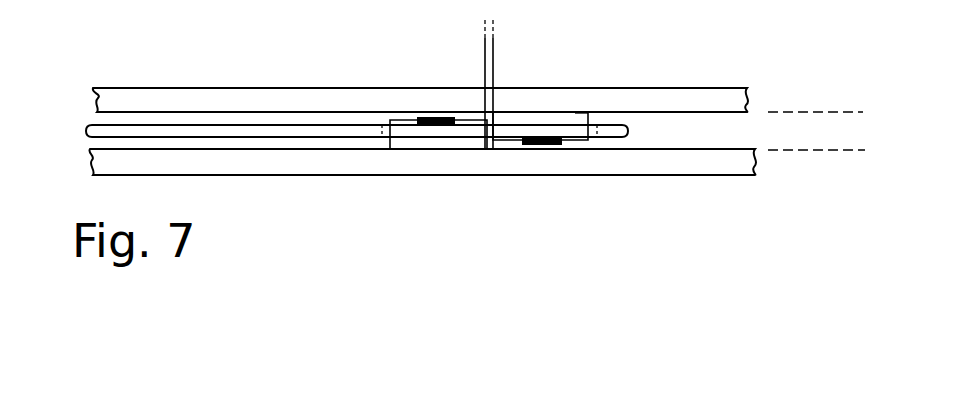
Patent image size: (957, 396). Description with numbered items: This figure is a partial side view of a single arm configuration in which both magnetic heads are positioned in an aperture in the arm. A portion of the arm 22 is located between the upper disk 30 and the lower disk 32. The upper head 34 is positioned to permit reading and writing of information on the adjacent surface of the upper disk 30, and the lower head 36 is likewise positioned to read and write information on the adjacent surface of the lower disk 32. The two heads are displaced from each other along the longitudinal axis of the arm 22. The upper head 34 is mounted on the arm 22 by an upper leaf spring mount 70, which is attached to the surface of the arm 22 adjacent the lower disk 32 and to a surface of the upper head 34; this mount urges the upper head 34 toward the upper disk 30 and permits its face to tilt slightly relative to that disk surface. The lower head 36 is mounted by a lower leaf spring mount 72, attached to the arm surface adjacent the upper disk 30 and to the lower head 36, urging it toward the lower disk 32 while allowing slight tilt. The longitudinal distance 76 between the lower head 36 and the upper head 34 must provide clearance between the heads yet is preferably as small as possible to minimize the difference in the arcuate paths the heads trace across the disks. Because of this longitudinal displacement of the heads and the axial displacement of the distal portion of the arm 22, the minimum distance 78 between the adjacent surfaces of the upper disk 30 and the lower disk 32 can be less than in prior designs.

The arm 22 is at (98, 137).
The upper disk 30 is at (213, 88).
The lower disk 32 is at (257, 175).
The upper head 34 is at (578, 113).
The lower head 36 is at (457, 143).
The upper leaf spring mount 70 is at (548, 143).
The lower leaf spring mount 72 is at (432, 118).
The longitudinal distance 76 is at (423, 47).
The minimum distance 78 is at (825, 57).